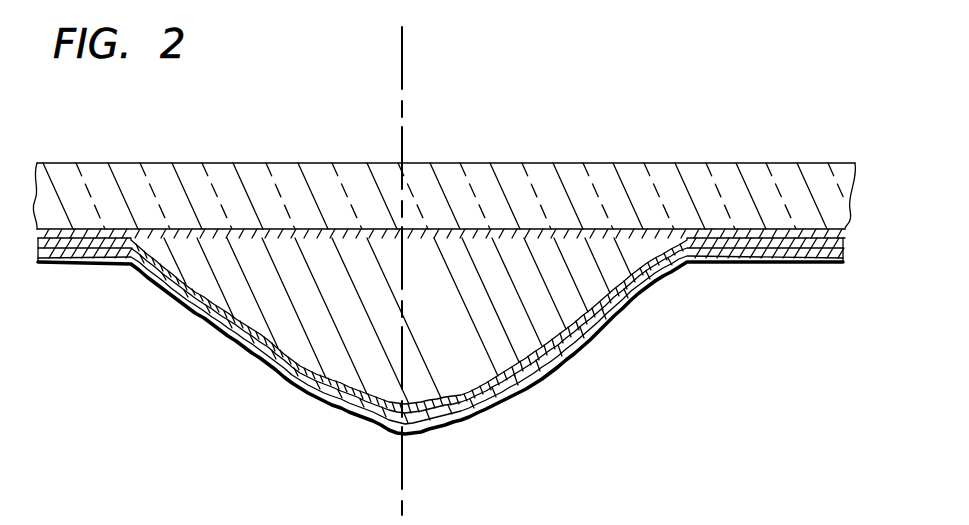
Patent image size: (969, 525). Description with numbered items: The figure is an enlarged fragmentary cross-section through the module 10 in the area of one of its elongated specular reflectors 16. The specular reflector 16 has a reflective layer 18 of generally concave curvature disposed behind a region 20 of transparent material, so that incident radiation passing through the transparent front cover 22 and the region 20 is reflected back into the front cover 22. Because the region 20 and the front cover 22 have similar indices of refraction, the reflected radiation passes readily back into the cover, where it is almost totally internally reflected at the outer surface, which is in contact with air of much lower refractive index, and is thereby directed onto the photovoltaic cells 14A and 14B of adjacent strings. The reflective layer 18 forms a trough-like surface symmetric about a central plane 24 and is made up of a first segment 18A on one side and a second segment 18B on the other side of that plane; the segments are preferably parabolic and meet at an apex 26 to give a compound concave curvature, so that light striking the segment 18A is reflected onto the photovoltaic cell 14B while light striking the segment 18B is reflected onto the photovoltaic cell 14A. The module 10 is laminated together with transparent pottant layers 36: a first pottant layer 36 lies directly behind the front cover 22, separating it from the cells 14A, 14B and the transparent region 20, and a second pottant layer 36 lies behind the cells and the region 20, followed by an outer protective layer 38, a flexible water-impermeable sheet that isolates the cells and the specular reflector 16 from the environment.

The module 10 is at (259, 157).
The photovoltaic cell 14A is at (37, 236).
The photovoltaic cell 14B is at (850, 243).
The specular reflector 16 is at (260, 378).
The reflective layer 18 is at (573, 362).
The first segment 18A is at (200, 320).
The second segment 18B is at (644, 304).
The region of transparent material 20 is at (330, 349).
The transparent front cover 22 is at (684, 185).
The central plane 24 is at (403, 88).
The apex 26 is at (387, 432).
The transparent pottant layer 36 is at (672, 245).
The outer protective layer 38 is at (604, 333).